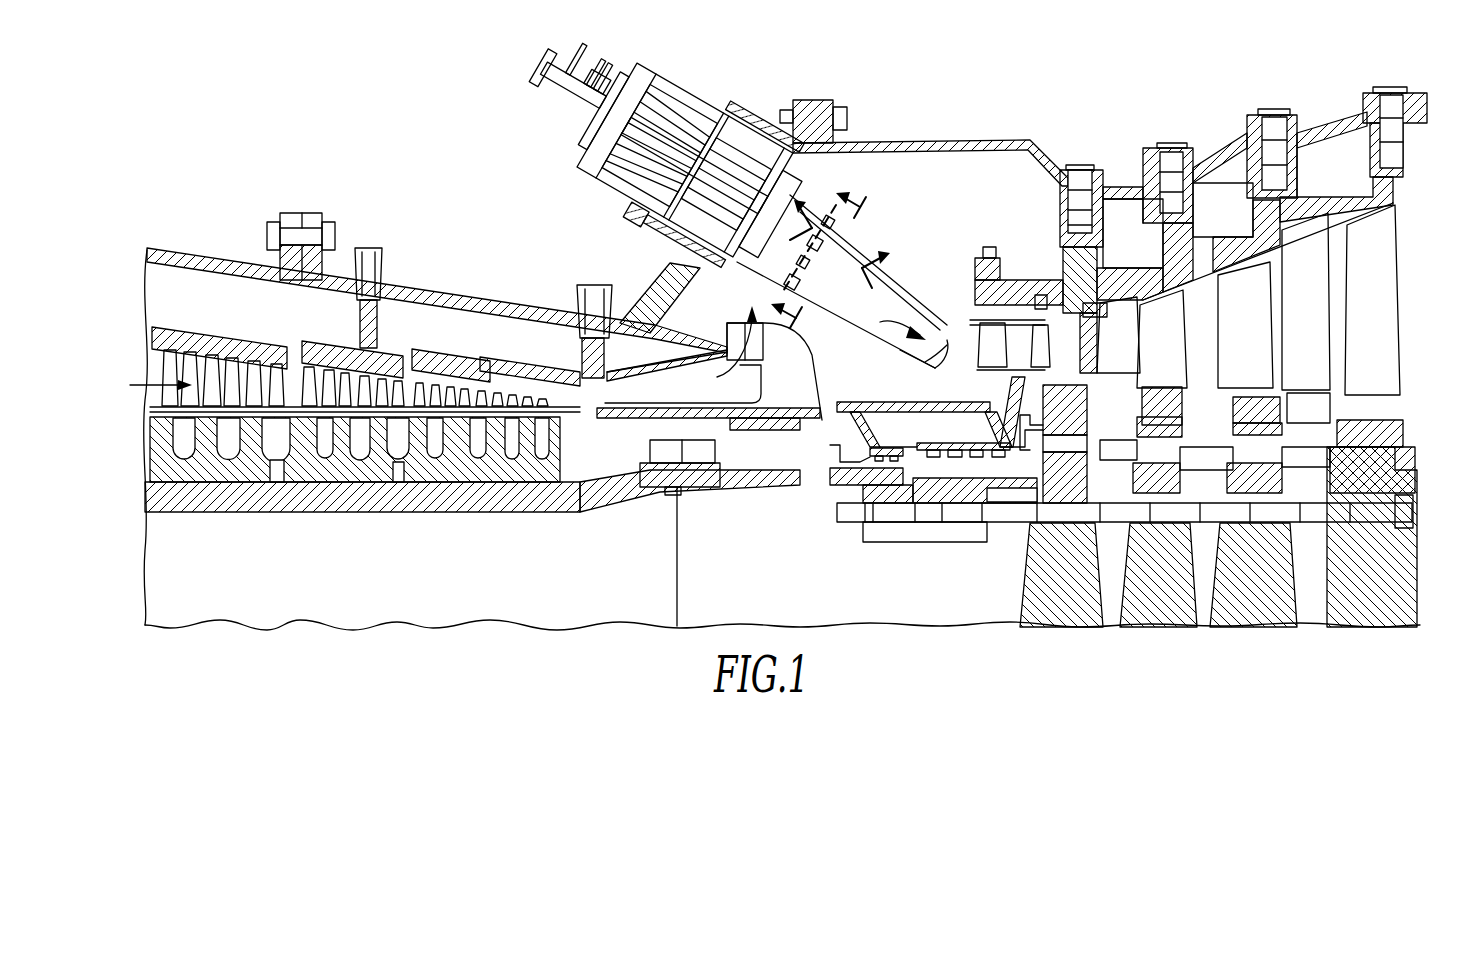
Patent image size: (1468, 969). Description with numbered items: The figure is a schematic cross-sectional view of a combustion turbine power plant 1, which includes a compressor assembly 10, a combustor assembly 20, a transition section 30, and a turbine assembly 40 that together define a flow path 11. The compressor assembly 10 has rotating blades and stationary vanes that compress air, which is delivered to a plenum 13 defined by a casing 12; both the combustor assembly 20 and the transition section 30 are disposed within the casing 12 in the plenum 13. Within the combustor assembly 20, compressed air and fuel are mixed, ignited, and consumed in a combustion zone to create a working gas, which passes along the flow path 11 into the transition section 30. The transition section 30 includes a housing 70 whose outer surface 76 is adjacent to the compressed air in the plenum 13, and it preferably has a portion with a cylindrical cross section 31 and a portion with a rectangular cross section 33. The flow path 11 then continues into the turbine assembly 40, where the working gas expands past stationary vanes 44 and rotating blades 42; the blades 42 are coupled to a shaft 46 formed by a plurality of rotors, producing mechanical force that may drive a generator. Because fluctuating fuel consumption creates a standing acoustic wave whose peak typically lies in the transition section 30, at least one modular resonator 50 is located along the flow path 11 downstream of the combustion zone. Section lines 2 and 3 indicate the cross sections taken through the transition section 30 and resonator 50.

The combustion turbine power plant 1 is at (368, 114).
The section line 2- 2 is at (826, 259).
The section line 3- 3 is at (829, 266).
The compressor assembly 10 is at (460, 290).
The flow path 11 is at (147, 376).
The casing 12 is at (944, 140).
The plenum 13 is at (1016, 172).
The combustor assembly 20 is at (733, 100).
The transition section 30 is at (905, 272).
The portion with cylindrical cross section 31 is at (862, 248).
The portion with rectangular cross section 33 is at (952, 333).
The turbine assembly 40 is at (1207, 160).
The rotating blades 42 is at (1262, 338).
The stationary vanes 44 is at (1200, 322).
The shaft 46 is at (1422, 537).
The modular resonator 50 is at (824, 236).
The housing 70 is at (896, 350).
The outer surface 76 is at (938, 350).